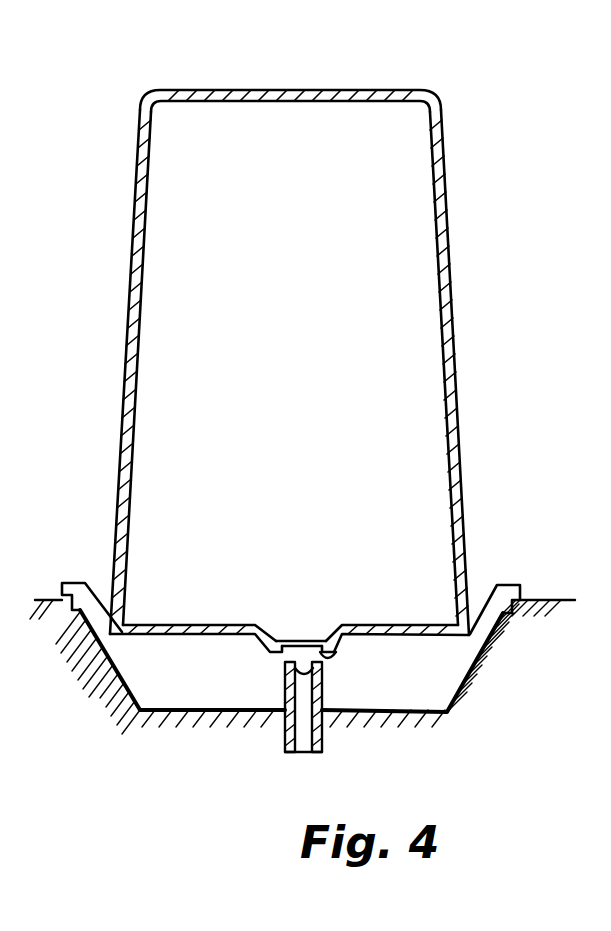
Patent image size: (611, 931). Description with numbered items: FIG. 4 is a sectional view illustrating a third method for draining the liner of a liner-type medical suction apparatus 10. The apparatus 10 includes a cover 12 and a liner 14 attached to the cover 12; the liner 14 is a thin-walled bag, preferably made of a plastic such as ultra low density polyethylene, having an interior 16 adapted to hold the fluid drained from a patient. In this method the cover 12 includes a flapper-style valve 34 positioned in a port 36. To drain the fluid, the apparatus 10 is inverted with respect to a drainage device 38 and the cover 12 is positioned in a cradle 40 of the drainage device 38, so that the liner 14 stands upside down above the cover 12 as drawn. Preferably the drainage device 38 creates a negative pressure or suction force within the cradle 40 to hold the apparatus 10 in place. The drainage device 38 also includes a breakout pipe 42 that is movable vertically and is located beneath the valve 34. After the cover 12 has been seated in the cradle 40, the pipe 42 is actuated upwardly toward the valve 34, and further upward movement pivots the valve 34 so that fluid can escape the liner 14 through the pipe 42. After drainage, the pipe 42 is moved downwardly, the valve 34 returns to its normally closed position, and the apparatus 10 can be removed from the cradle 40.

The liner-type medical suction apparatus 10 is at (448, 276).
The cover 12 is at (423, 625).
The liner 14 is at (416, 90).
The interior 16 is at (407, 170).
The flapper-style valve 34 is at (305, 638).
The port 36 is at (320, 652).
The drainage device 38 is at (110, 690).
The cradle 40 is at (198, 688).
The breakout pipe 42 is at (283, 745).